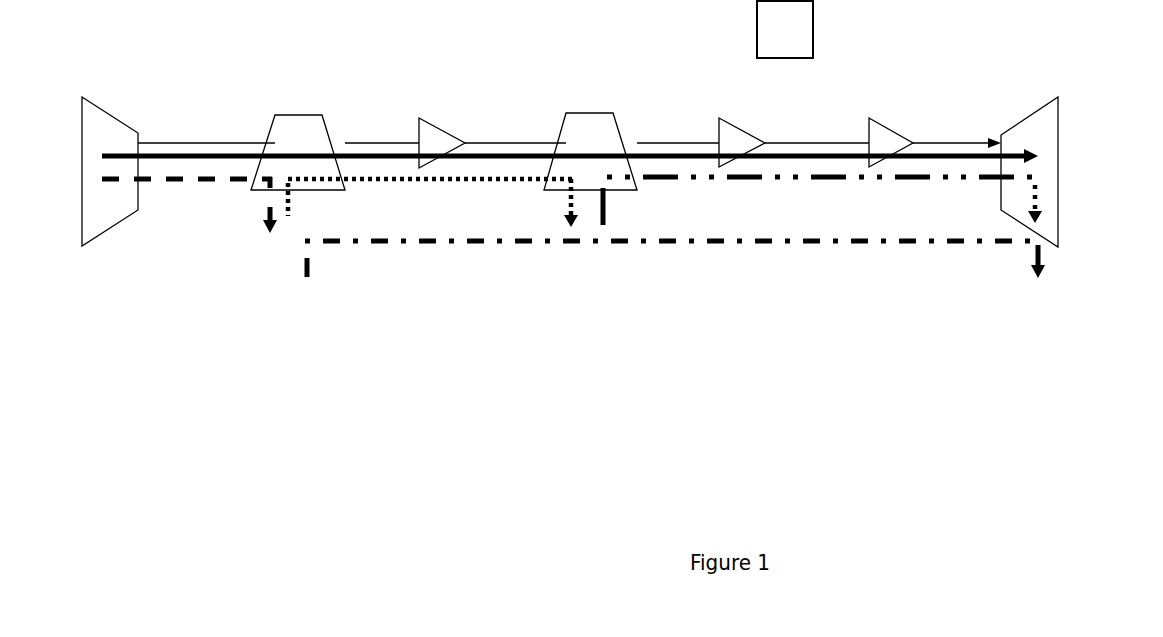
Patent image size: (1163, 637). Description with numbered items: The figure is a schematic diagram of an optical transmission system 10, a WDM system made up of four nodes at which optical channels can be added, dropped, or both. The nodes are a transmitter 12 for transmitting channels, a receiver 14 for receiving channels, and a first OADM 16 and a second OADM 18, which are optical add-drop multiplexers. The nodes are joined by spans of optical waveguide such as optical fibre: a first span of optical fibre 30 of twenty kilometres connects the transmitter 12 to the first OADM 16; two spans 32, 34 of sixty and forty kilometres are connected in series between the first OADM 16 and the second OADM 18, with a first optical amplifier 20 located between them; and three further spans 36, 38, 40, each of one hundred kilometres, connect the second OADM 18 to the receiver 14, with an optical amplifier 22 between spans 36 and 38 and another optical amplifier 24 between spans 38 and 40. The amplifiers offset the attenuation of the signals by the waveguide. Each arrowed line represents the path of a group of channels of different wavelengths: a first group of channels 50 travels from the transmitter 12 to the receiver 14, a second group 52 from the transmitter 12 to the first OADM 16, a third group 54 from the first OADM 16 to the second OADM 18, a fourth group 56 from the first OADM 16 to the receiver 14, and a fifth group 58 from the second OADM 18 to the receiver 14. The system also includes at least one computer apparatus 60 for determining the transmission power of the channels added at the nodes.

The optical transmission system 10 is at (1100, 95).
The transmitter 12 is at (102, 188).
The receiver 14 is at (1038, 133).
The first OADM 16 is at (307, 133).
The second OADM 18 is at (588, 128).
The first optical amplifier 20 is at (433, 138).
The optical amplifier 22 is at (740, 135).
The optical amplifier 24 is at (883, 140).
The first span of optical fibre 30 is at (175, 145).
The optical waveguide span 32 is at (382, 142).
The optical waveguide span 34 is at (494, 142).
The optical waveguide span 36 is at (662, 140).
The optical waveguide span 38 is at (810, 143).
The optical waveguide span 40 is at (938, 142).
The first group of channels 50 is at (107, 145).
The second group of channels 52 is at (183, 185).
The third group of channels 54 is at (370, 188).
The fourth group of channels 56 is at (380, 248).
The fifth group of channels 58 is at (768, 178).
The computer apparatus 60 is at (785, 29).